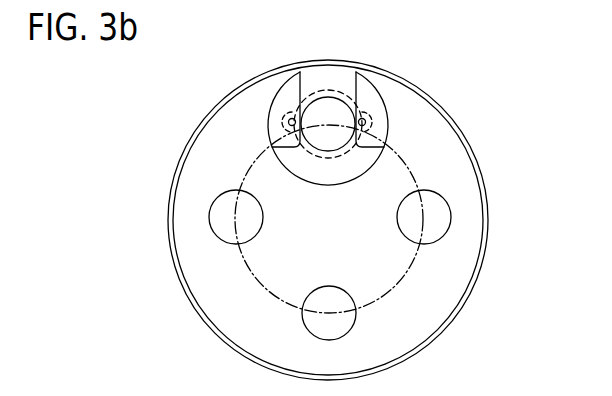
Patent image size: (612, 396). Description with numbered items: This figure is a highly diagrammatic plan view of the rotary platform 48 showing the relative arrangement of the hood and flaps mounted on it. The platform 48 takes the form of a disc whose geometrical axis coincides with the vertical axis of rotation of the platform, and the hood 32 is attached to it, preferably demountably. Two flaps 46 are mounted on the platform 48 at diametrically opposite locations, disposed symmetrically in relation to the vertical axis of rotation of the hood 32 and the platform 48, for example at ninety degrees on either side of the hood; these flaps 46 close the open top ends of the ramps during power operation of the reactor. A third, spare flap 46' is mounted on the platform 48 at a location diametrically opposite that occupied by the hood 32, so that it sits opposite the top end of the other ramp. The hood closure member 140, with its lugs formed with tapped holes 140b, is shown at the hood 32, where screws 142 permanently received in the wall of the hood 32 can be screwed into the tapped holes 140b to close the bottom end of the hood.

The hood 32 is at (287, 86).
The hood closure member 140 is at (357, 100).
The screws 142 is at (117, 135).
The tapped holes 140b is at (283, 119).
The flaps 46 is at (328, 208).
The spare flap 46' is at (242, 316).
The rotary platform 48 is at (445, 297).